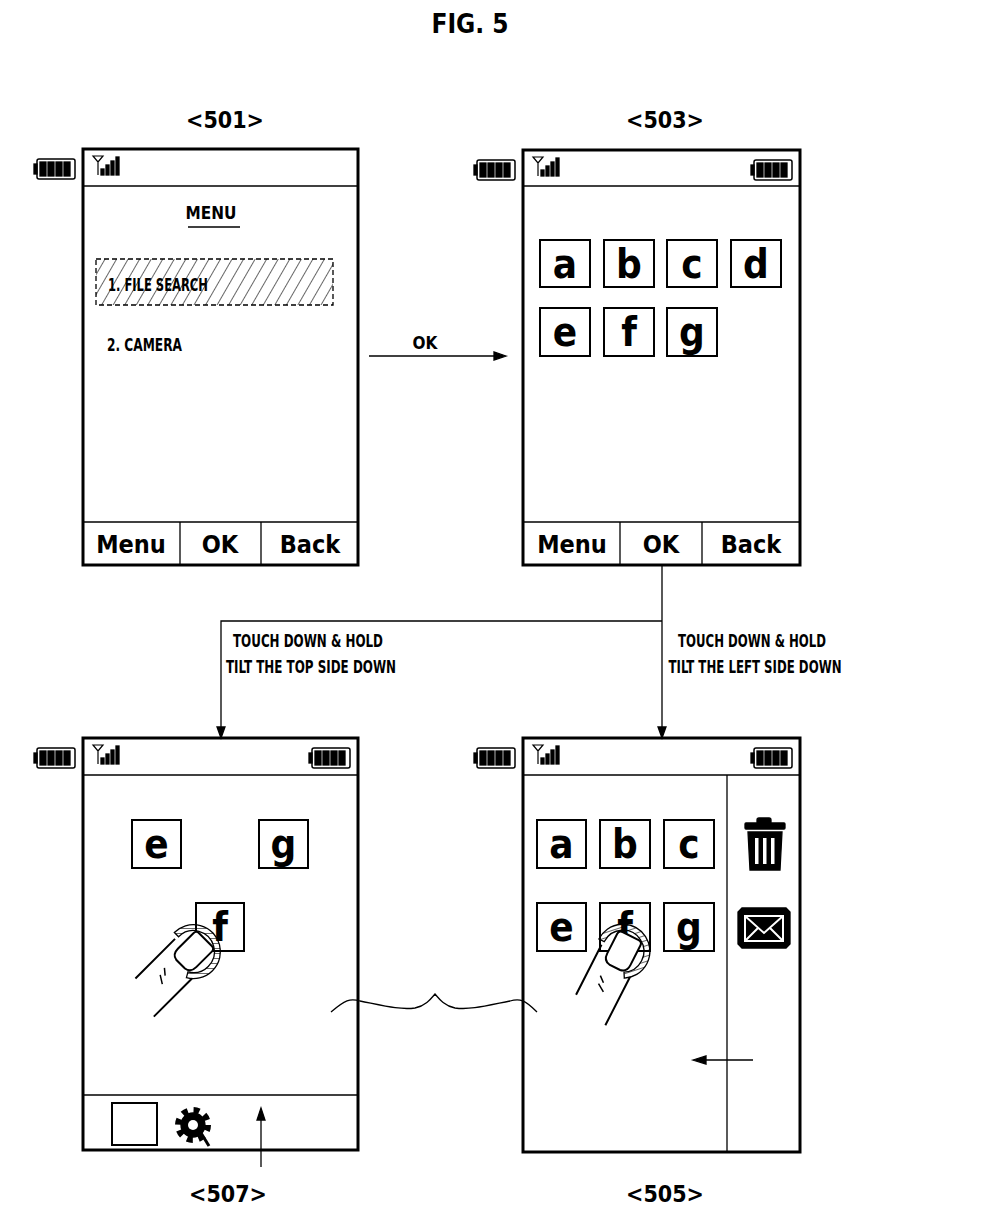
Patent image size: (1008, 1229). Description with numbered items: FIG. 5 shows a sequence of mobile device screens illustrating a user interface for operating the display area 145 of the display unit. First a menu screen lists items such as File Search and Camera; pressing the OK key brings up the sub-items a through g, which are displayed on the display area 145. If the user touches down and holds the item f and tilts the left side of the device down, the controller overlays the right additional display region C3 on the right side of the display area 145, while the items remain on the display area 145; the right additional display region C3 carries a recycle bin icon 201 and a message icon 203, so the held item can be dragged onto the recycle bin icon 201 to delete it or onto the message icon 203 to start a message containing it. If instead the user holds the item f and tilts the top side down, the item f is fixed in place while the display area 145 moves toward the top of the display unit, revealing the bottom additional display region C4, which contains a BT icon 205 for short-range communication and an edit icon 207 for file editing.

The display area 145 is at (434, 991).
The recycle bin icon 201 is at (785, 843).
The message icon 203 is at (790, 925).
The BT icon 205 is at (134, 1146).
The edit icon 207 is at (193, 1148).
The right additional display region C3 is at (773, 1125).
The bottom additional display region C4 is at (332, 1128).